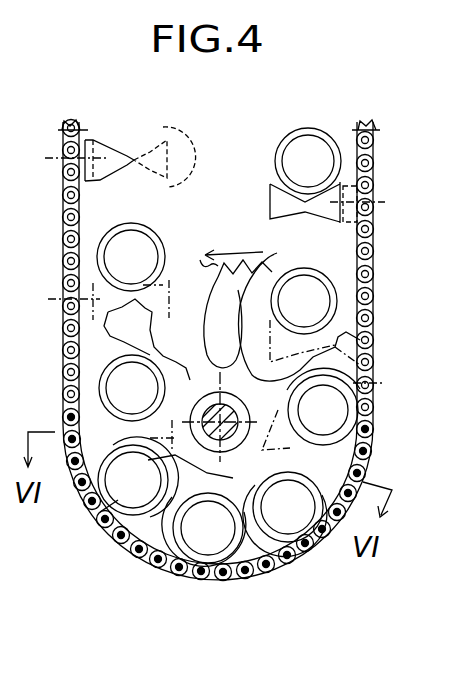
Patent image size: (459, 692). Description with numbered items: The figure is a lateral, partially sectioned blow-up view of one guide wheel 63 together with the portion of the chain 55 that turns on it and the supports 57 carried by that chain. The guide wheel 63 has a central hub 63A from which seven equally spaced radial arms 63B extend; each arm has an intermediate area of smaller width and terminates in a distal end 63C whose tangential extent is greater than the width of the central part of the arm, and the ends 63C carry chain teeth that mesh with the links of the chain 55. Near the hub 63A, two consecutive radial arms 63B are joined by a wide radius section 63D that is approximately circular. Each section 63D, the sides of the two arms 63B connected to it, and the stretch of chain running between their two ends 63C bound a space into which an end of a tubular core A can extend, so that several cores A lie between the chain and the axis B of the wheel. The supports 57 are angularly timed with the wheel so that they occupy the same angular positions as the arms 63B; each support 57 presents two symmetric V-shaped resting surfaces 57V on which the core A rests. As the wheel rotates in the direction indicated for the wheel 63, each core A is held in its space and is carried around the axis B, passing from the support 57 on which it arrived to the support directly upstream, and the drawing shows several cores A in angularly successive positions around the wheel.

The chain 55 is at (78, 208).
The support 57 is at (124, 151).
The V-shaped resting surfaces 57V is at (158, 152).
The guide wheel 63 is at (231, 249).
The hub 63A is at (197, 410).
The radial arms 63B is at (216, 334).
The distal end 63C is at (300, 308).
The wide radius section 63D is at (187, 367).
The tubular core A is at (162, 240).
The axis B is at (240, 403).